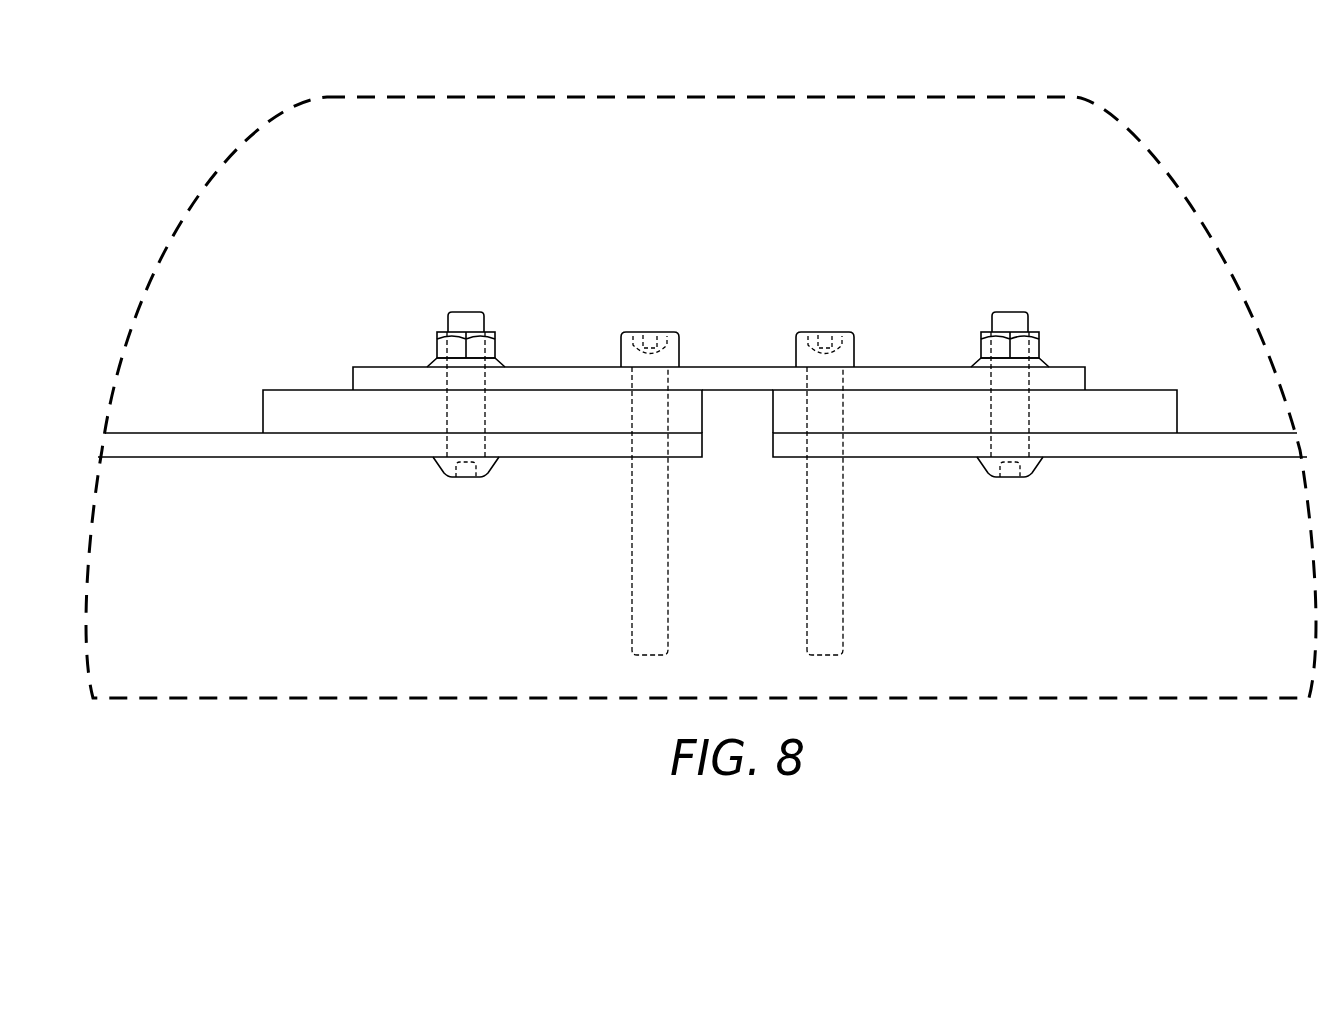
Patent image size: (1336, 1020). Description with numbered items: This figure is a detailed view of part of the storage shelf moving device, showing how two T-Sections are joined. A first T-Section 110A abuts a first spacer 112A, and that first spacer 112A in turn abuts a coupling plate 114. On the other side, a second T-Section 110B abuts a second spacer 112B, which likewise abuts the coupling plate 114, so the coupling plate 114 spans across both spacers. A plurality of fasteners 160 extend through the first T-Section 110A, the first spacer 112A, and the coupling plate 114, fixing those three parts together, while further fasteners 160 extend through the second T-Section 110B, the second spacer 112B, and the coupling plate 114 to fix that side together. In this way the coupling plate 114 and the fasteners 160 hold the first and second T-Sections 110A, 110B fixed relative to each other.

The first T-Section 110A is at (208, 446).
The second T-Section 110B is at (1232, 444).
The first spacer 112A is at (293, 398).
The second spacer 112B is at (1147, 398).
The coupling plate 114 is at (379, 373).
The fasteners 160 is at (630, 338).